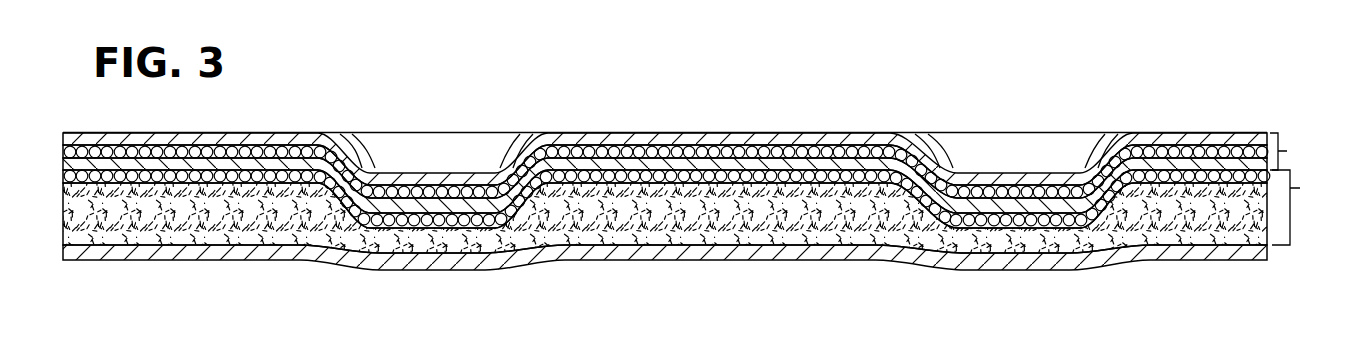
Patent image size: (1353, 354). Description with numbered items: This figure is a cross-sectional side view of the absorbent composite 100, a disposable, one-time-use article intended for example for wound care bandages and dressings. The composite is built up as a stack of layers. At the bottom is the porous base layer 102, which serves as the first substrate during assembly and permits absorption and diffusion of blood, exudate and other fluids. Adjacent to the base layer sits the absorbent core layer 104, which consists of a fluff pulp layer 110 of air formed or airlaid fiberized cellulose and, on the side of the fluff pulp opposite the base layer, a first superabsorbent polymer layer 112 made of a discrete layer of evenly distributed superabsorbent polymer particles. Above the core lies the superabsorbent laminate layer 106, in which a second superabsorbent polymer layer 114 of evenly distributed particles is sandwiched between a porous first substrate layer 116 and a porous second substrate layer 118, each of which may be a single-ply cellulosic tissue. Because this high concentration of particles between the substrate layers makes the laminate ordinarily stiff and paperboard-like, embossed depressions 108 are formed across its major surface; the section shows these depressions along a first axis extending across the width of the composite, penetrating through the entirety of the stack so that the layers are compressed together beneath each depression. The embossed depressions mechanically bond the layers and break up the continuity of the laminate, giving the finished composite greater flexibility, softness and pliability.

The absorbent composite 100 is at (452, 105).
The porous base layer 102 is at (585, 258).
The absorbent core layer 104 is at (1308, 207).
The superabsorbent laminate layer 106 is at (1300, 151).
The embossed depressions 108 is at (474, 143).
The fluff pulp layer 110 is at (815, 228).
The first superabsorbent polymer layer 112 is at (1020, 226).
The second superabsorbent polymer layer 114 is at (662, 152).
The first substrate layer 116 is at (1160, 160).
The second substrate layer 118 is at (878, 138).